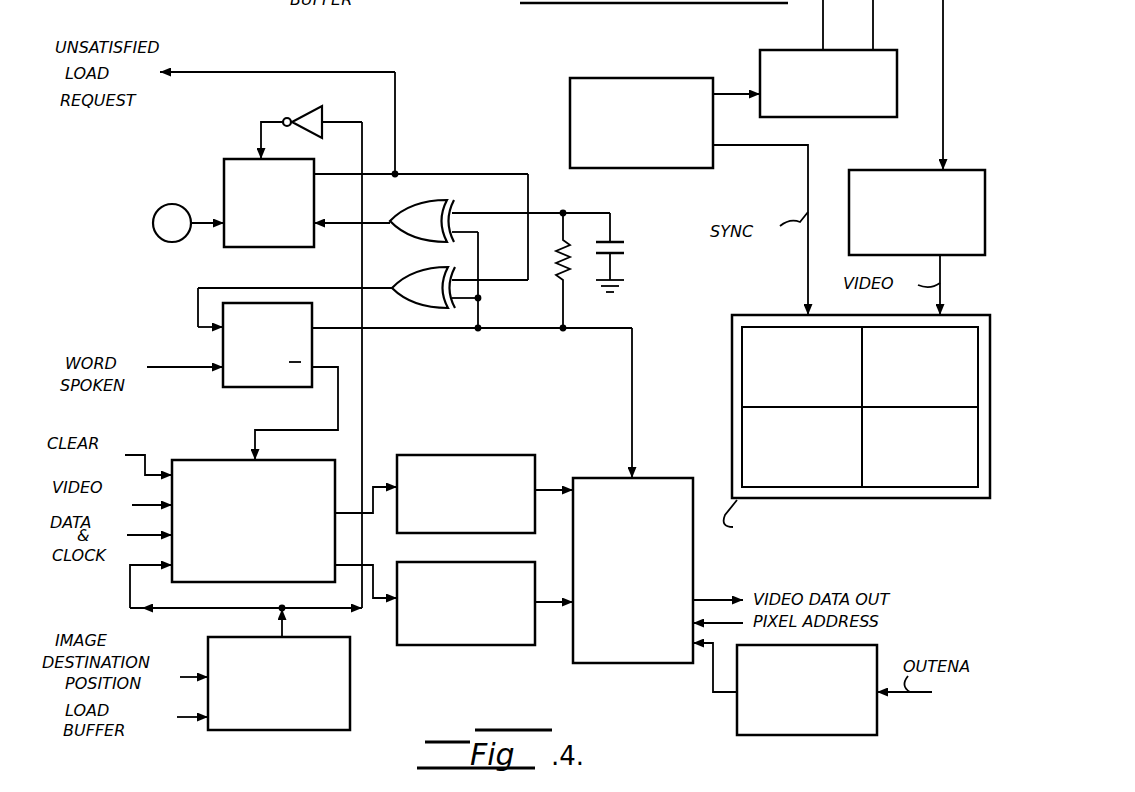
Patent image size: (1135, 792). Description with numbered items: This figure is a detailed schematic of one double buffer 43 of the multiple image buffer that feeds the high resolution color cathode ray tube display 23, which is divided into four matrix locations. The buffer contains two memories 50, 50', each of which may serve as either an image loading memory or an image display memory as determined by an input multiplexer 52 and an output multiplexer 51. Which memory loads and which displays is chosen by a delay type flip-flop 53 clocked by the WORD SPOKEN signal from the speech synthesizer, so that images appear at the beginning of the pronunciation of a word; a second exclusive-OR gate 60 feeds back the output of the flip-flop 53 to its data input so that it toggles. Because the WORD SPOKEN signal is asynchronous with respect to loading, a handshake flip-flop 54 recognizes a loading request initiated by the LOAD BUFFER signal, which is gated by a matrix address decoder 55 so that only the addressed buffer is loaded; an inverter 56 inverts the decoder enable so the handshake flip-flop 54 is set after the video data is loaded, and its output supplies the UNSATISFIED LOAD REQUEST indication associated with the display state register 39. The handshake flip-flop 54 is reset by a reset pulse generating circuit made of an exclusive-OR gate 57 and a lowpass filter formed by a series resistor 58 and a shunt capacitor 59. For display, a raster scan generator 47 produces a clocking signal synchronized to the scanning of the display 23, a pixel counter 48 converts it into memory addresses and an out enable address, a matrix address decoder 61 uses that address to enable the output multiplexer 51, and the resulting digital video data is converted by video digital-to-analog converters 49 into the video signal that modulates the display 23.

The display 23 is at (763, 315).
The display state register 39 is at (143, 200).
The double buffer 43 is at (455, 128).
The raster scan generator 47 is at (670, 78).
The pixel counter 48 is at (828, 117).
The video digital-to-analog converters 49 is at (913, 170).
The memory 50 is at (466, 474).
The memory 50' is at (466, 591).
The output multiplexer 51 is at (652, 478).
The input multiplexer 52 is at (203, 460).
The delay type flip-flop 53 is at (262, 388).
The handshake flip-flop 54 is at (224, 167).
The matrix address decoder 55 is at (350, 683).
The inverter 56 is at (317, 108).
The exclusive-OR gate 57 is at (428, 203).
The series resistor 58 is at (560, 268).
The shunt capacitor 59 is at (618, 243).
The second exclusive-OR gate 60 is at (398, 268).
The matrix address decoder 61 is at (737, 710).